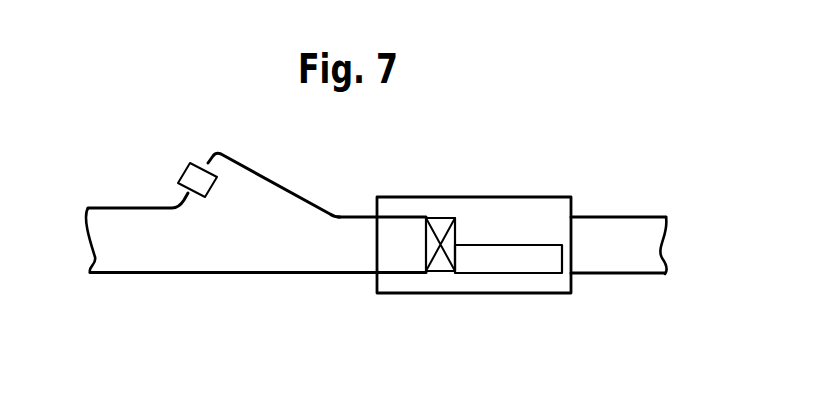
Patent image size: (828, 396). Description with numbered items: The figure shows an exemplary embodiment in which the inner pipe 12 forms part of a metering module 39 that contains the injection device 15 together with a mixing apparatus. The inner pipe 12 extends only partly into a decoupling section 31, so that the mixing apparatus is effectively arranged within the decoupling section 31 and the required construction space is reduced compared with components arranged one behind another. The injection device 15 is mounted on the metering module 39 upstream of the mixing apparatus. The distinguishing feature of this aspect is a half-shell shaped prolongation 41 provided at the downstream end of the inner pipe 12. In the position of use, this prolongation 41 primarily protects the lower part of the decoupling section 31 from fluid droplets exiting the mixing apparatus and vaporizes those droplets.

The inner pipe 12 is at (402, 217).
The injection device 15 is at (189, 181).
The decoupling section 31 is at (510, 197).
The metering module 39 is at (243, 218).
The half-shell shaped prolongation 41 is at (512, 275).